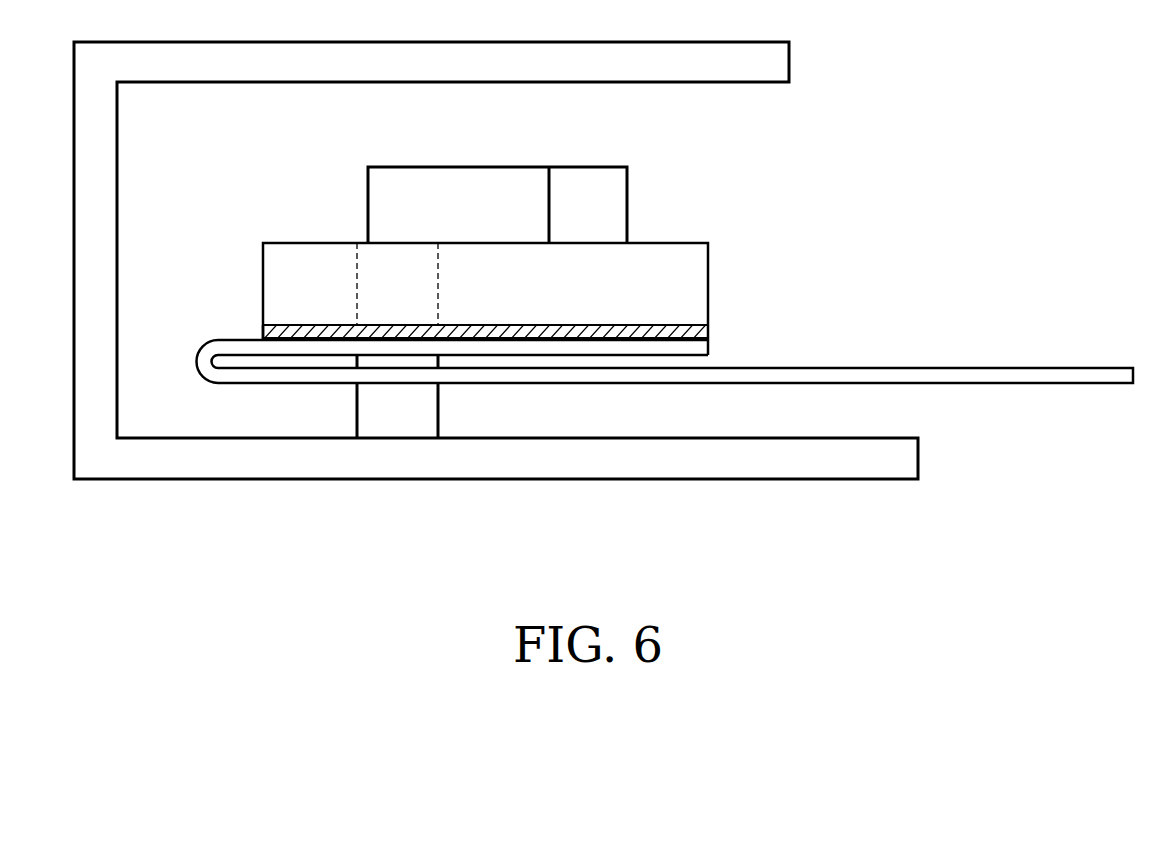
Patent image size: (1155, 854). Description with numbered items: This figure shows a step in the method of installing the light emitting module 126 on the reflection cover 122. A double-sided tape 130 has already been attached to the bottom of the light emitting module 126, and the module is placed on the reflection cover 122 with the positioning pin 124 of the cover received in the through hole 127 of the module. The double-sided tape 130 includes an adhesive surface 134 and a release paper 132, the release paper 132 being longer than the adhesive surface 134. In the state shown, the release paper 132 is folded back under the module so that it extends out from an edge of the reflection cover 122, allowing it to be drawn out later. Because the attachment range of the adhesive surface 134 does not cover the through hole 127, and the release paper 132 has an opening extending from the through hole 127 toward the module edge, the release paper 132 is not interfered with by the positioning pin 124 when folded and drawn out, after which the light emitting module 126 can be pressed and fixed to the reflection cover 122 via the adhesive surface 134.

The reflection cover 122 is at (783, 62).
The positioning pin 124 is at (397, 425).
The light emitting module 126 is at (716, 235).
The through hole 127 is at (367, 257).
The double-sided tape 130 is at (715, 330).
The release paper 132 is at (1008, 377).
The adhesive surface 134 is at (263, 330).